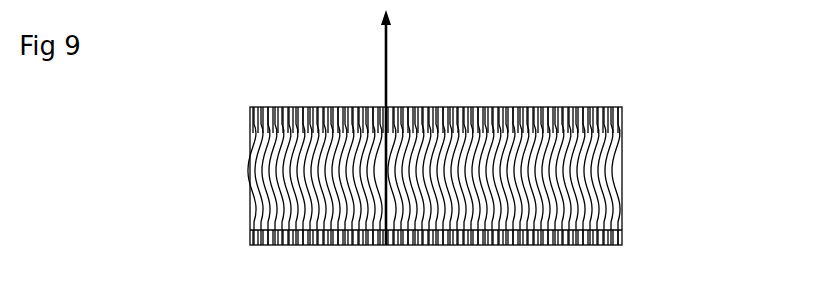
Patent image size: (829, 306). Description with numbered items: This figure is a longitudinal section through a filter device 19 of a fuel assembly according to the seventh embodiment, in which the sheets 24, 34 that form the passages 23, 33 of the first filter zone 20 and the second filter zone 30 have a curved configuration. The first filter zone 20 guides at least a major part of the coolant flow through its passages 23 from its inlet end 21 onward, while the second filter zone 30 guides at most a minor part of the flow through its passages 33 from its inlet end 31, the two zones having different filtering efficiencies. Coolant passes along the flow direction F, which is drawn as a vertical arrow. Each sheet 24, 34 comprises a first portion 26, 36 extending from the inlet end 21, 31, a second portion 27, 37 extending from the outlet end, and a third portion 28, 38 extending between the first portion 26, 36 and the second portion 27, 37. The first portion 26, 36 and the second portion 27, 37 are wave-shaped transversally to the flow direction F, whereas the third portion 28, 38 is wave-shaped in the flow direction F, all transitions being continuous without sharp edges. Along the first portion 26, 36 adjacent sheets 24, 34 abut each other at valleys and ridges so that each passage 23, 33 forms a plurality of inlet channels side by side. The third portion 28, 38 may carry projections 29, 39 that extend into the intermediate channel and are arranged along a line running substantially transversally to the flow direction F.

The filter device 19 is at (244, 88).
The first filter zone 20 is at (319, 104).
The inlet end 21 is at (351, 248).
The passages 23 is at (272, 133).
The sheet 24 is at (283, 238).
The first portion 26 is at (267, 211).
The second portion 27 is at (257, 125).
The third portion 28 is at (273, 168).
The projections 29 is at (320, 167).
The second filter zone 30 is at (417, 104).
The inlet end 31 is at (459, 248).
The passages 33 is at (453, 133).
The sheet 34 is at (427, 240).
The first portion 36 is at (473, 203).
The second portion 37 is at (473, 133).
The third portion 38 is at (483, 172).
The projections 39 is at (475, 168).
The flow direction F is at (386, 129).